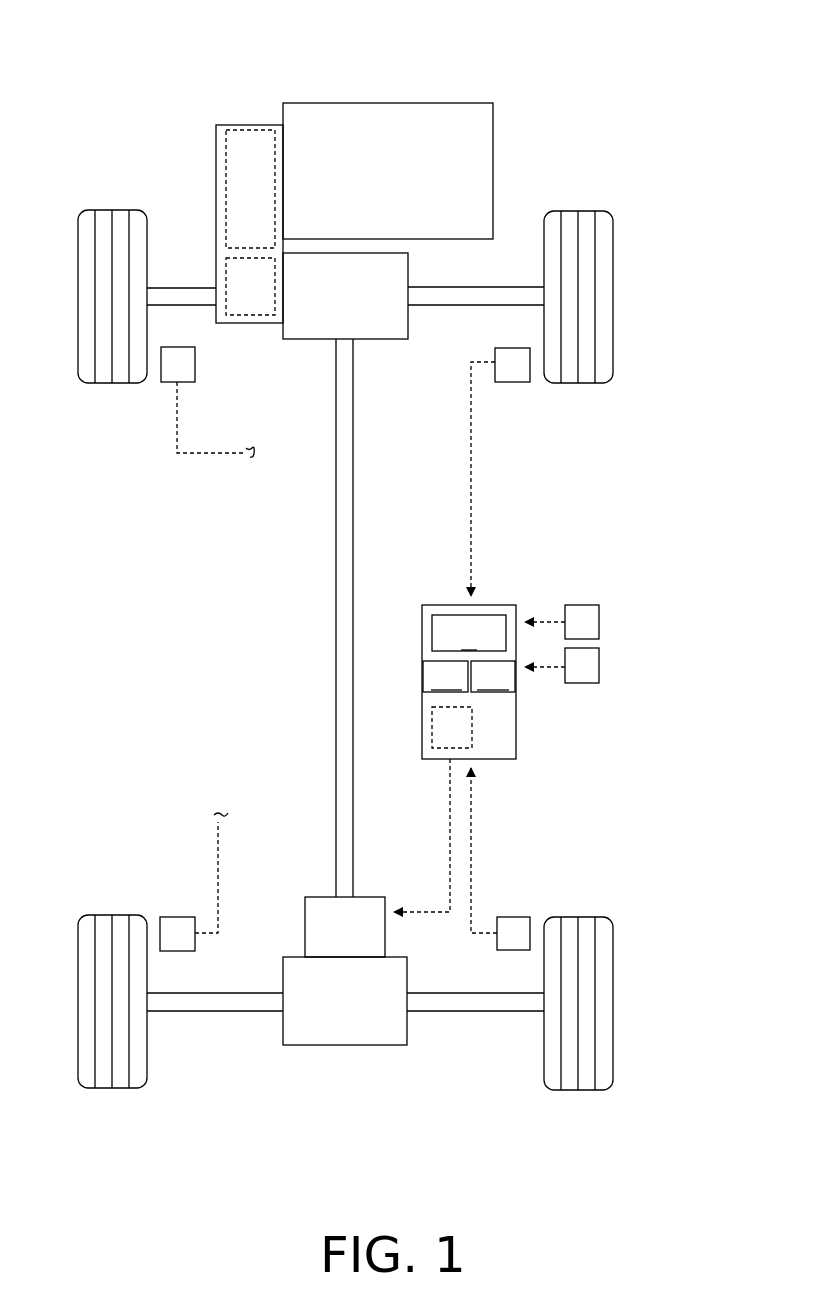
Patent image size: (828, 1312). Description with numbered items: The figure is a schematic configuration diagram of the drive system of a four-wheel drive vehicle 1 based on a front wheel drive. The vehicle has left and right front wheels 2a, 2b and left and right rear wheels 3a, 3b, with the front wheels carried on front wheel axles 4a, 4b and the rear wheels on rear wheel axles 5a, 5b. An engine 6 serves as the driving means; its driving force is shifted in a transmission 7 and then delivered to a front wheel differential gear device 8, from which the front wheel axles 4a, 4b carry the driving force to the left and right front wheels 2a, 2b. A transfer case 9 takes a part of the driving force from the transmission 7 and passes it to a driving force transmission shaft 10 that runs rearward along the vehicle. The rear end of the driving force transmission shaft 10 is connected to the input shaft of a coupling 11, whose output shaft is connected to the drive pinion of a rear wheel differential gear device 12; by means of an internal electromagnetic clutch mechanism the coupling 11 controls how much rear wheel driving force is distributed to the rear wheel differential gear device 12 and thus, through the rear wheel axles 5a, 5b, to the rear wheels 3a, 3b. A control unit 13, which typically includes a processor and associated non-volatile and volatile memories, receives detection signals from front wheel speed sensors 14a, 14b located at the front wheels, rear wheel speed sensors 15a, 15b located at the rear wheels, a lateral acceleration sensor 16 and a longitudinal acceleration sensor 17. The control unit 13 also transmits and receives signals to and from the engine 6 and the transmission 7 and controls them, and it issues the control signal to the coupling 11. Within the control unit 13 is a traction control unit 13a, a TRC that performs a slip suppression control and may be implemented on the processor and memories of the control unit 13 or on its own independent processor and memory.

The four-wheel drive vehicle 1 is at (594, 74).
The left front wheel 2a is at (106, 383).
The right front wheel 2b is at (571, 383).
The left rear wheel 3a is at (117, 1088).
The right rear wheel 3b is at (572, 1090).
The front wheel axle 4a is at (187, 288).
The front wheel axle 4b is at (456, 305).
The rear wheel axle 5a is at (217, 1011).
The rear wheel axle 5b is at (465, 1011).
The engine 6 is at (389, 103).
The transmission 7 is at (216, 188).
The front wheel differential gear device 8 is at (244, 323).
The transfer case 9 is at (373, 339).
The driving force transmission shaft 10 is at (336, 590).
The coupling 11 is at (314, 897).
The rear wheel differential gear device 12 is at (350, 1045).
The control unit 13 is at (516, 748).
The traction control unit 13a is at (472, 722).
The front wheel speed sensor 14a is at (168, 382).
The front wheel speed sensor 14b is at (511, 382).
The rear wheel speed sensor 15a is at (168, 917).
The rear wheel speed sensor 15b is at (513, 917).
The lateral acceleration sensor 16 is at (582, 605).
The longitudinal acceleration sensor 17 is at (599, 660).